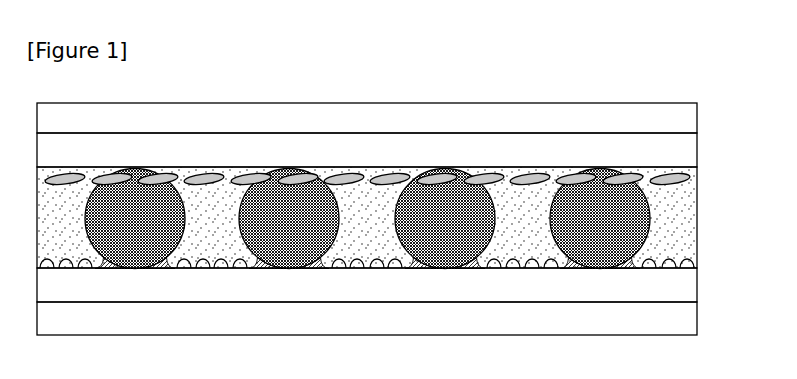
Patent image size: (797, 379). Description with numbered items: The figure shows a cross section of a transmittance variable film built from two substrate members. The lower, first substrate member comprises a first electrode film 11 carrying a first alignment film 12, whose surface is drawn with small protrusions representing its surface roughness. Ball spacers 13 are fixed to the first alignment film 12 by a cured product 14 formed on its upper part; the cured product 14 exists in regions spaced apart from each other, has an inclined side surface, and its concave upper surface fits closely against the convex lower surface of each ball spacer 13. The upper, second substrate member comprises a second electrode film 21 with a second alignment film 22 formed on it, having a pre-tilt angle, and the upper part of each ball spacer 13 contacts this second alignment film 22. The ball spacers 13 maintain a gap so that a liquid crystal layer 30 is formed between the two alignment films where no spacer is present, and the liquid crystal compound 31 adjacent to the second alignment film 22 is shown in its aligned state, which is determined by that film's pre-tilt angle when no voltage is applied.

The first electrode film 11 is at (697, 317).
The first alignment film 12 is at (697, 283).
The ball spacer 13 is at (580, 268).
The cured product 14 is at (627, 268).
The second electrode film 21 is at (697, 114).
The second alignment film 22 is at (697, 147).
The liquid crystal layer 30 is at (680, 229).
The liquid crystal compound 31 is at (690, 177).